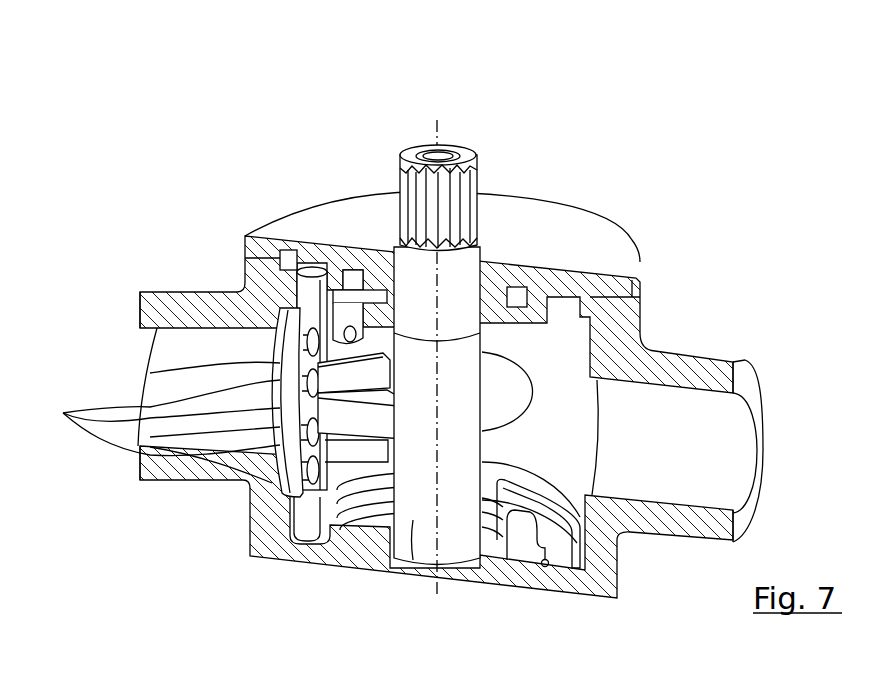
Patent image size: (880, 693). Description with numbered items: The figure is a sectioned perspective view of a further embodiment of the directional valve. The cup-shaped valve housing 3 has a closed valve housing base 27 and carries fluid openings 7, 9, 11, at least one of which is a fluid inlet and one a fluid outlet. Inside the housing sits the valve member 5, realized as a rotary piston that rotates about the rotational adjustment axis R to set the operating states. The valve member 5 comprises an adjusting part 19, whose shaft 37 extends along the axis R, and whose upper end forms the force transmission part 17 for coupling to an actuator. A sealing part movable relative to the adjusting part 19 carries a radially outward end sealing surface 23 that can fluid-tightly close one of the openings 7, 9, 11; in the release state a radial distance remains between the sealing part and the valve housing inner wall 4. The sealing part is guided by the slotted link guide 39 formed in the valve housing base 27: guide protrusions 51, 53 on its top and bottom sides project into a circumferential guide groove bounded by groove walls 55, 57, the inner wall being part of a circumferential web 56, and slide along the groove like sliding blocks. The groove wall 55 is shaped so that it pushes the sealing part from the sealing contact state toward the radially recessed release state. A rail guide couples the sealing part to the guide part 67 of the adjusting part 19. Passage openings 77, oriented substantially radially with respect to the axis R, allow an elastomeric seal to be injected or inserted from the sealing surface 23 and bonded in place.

The valve housing 3 is at (648, 311).
The valve housing inner wall 4 is at (500, 392).
The valve member 5 is at (412, 126).
The fluid opening 7 is at (183, 352).
The fluid opening 9 is at (603, 285).
The fluid opening 11 is at (733, 428).
The force transmission part 17 is at (478, 175).
The adjusting part 19 is at (413, 528).
The end sealing surface 23 is at (150, 373).
The valve housing base 27 is at (340, 555).
The shaft 37 is at (450, 287).
The slotted link guide 39 is at (283, 293).
The guide protrusion 51 is at (310, 290).
The guide protrusion 53 is at (305, 522).
The groove wall 55 is at (577, 522).
The circumferential web 56 is at (537, 548).
The groove wall 57 is at (513, 532).
The guide part 67 is at (360, 377).
The passage openings 77 is at (156, 431).
The rotational adjustment axis R is at (440, 128).